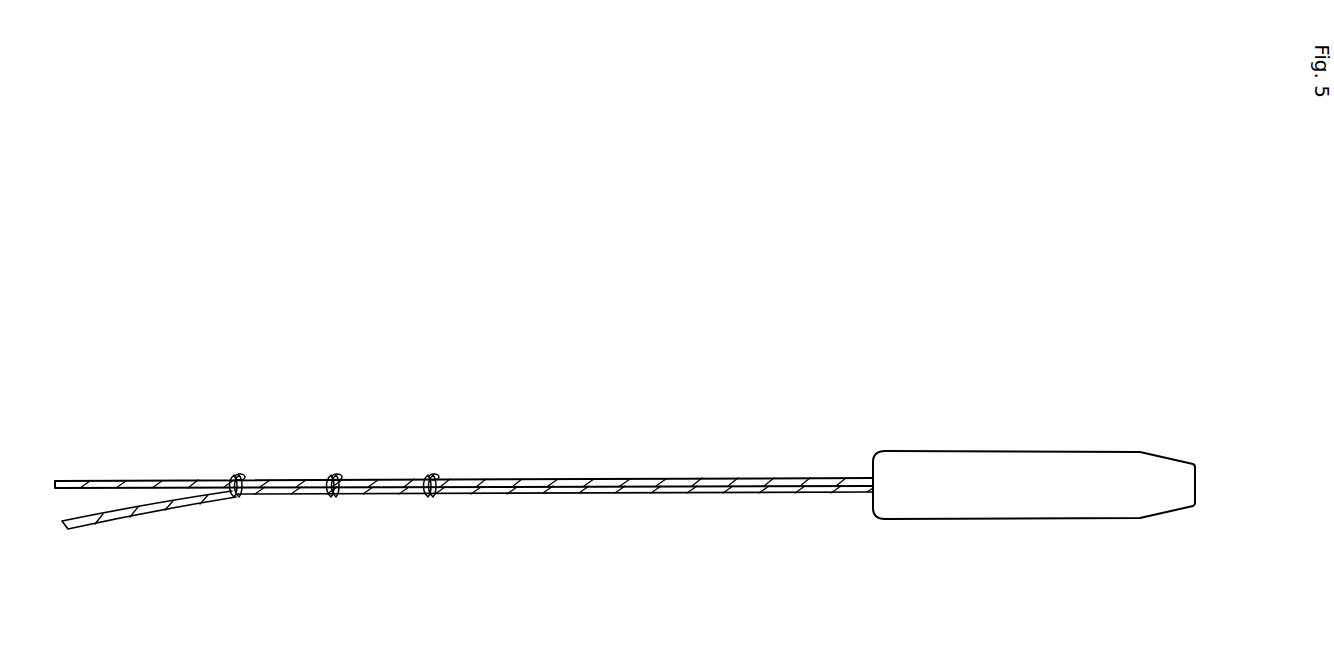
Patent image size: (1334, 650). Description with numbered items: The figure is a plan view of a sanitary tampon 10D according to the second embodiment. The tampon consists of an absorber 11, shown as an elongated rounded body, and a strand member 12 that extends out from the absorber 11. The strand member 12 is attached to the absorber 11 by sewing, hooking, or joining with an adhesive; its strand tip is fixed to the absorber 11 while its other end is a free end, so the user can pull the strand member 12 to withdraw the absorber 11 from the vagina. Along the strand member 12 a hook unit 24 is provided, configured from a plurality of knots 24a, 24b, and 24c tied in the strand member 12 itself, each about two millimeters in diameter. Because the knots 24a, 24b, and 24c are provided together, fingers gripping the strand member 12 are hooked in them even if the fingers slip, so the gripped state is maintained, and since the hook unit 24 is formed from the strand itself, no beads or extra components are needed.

The sanitary tampon 10D is at (955, 398).
The absorber 11 is at (1088, 515).
The strand member 12 is at (661, 478).
The hook unit 24 is at (395, 450).
The knot 24a is at (430, 498).
The knot 24b is at (333, 498).
The knot 24c is at (237, 498).